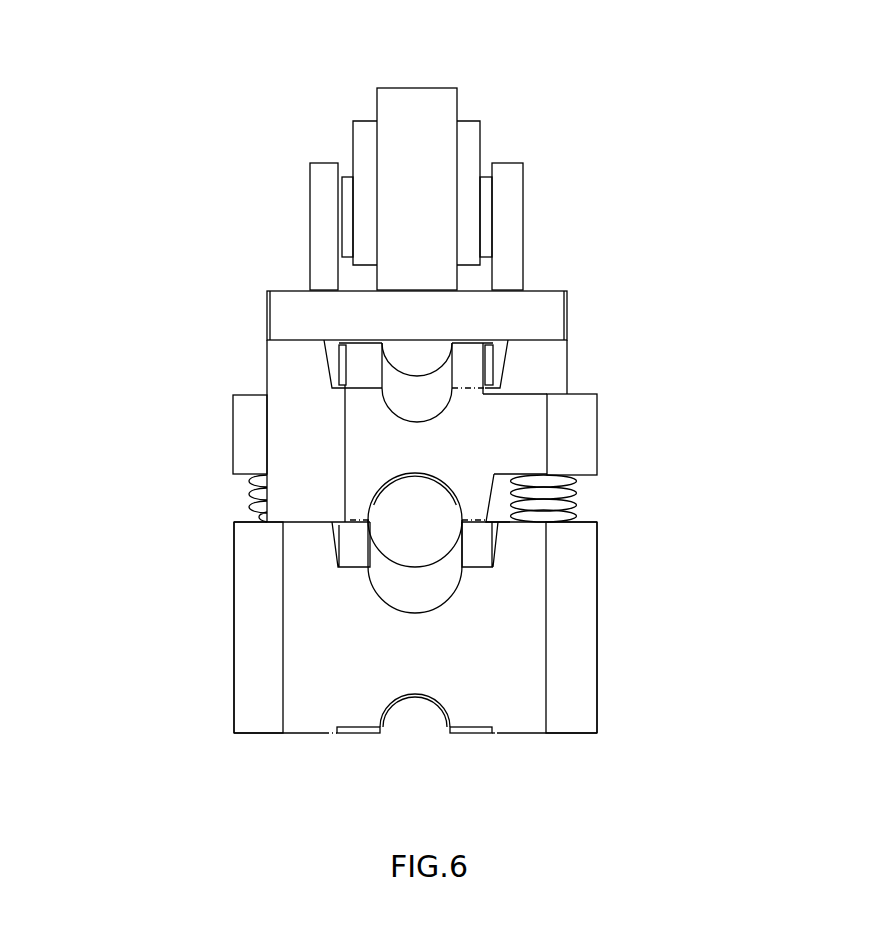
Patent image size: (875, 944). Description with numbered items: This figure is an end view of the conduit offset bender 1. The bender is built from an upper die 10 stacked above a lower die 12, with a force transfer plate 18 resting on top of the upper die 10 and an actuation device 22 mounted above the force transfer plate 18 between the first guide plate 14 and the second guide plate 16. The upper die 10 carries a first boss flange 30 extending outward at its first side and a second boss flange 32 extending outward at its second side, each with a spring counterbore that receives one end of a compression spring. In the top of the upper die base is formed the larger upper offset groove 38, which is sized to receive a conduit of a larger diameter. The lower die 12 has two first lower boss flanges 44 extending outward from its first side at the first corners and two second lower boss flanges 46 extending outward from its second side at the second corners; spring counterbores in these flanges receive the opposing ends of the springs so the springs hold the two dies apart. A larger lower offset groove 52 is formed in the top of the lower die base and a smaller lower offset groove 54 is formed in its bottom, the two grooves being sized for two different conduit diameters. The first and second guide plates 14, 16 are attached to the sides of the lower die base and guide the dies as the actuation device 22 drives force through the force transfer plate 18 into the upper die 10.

The conduit offset bender 1 is at (708, 142).
The upper die 10 is at (599, 355).
The lower die 12 is at (458, 604).
The first guide plate 14 is at (512, 162).
The second guide plate 16 is at (309, 182).
The force transfer plate 18 is at (565, 292).
The actuation device 22 is at (500, 92).
The first boss flange 30 is at (597, 420).
The second boss flange 32 is at (233, 436).
The larger upper offset groove 38 is at (408, 515).
The first lower boss flanges 44 is at (597, 622).
The second lower boss flanges 46 is at (233, 643).
The larger lower offset groove 52 is at (402, 588).
The smaller lower offset groove 54 is at (408, 398).